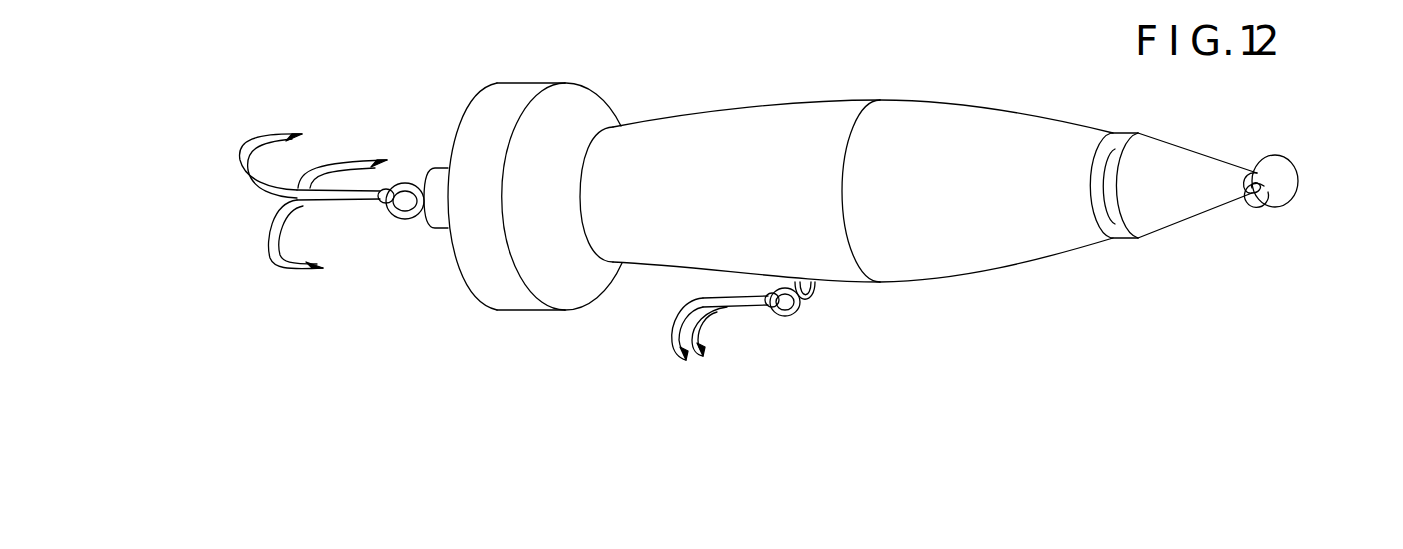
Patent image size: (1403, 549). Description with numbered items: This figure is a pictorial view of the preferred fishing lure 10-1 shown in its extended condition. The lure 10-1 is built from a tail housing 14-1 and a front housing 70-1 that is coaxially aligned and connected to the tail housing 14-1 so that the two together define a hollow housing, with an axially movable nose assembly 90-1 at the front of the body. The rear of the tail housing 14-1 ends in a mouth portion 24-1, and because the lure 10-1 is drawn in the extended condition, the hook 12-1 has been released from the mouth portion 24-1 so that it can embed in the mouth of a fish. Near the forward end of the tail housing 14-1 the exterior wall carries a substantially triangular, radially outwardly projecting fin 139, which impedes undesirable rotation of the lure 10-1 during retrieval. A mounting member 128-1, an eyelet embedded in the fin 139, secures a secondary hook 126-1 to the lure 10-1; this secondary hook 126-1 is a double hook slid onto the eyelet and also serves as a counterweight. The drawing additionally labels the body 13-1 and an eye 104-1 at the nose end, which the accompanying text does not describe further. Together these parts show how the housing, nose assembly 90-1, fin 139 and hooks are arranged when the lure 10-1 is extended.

The fishing lure 10-1 is at (753, 350).
The hook 12-1 is at (314, 163).
The lure body 13-1 is at (817, 101).
The tail housing 14-1 is at (650, 250).
The mouth portion 24-1 is at (557, 292).
The front housing 70-1 is at (948, 262).
The nose assembly 90-1 is at (1167, 215).
The line tie eye 104-1 is at (1282, 202).
The secondary hook 126-1 is at (672, 337).
The mounting member 128-1 is at (793, 318).
The fin 139 is at (822, 292).